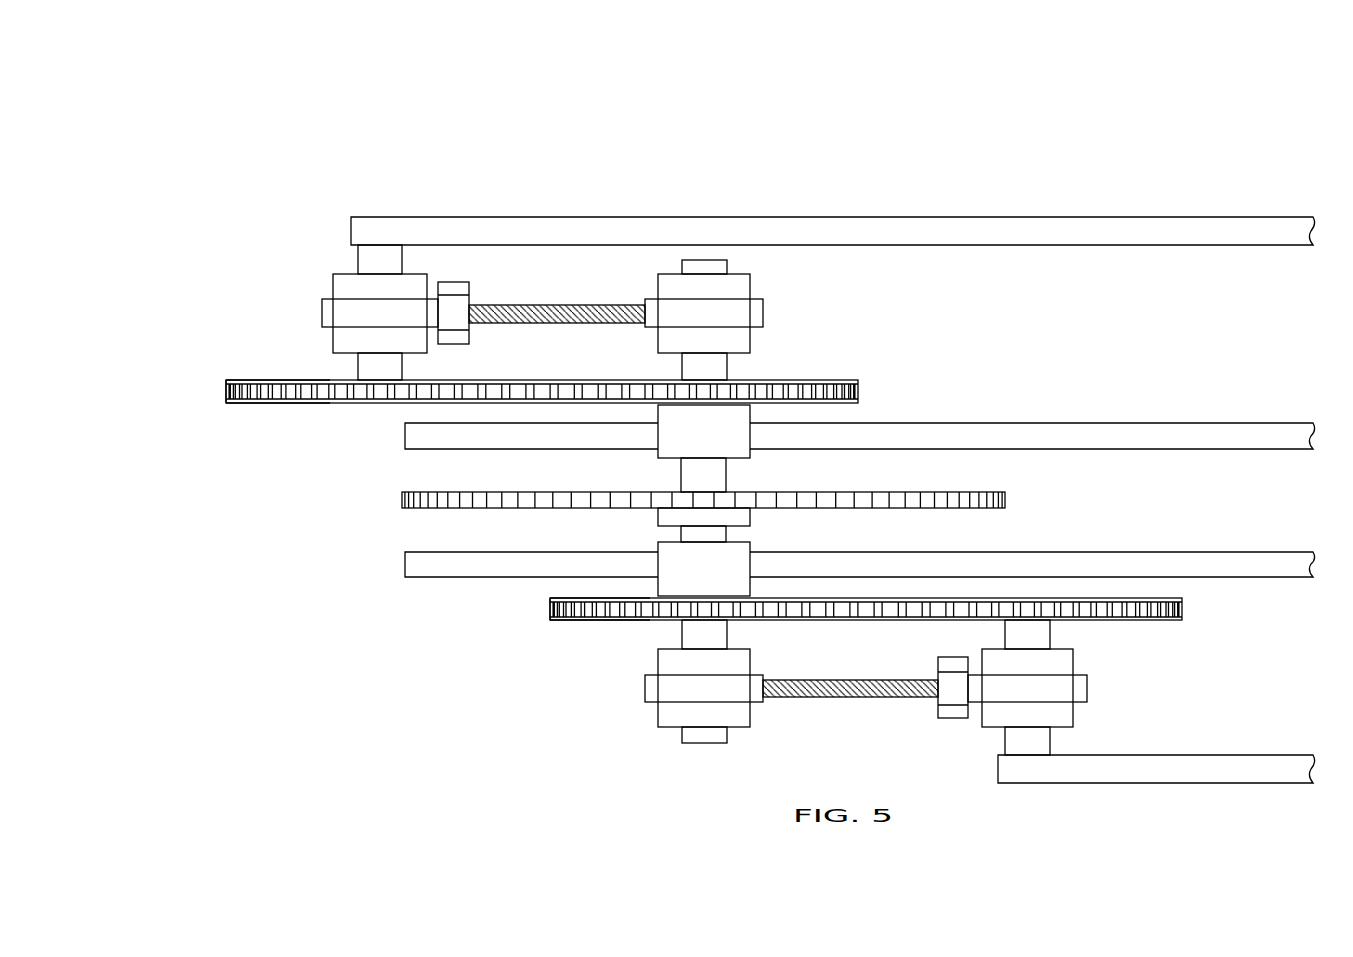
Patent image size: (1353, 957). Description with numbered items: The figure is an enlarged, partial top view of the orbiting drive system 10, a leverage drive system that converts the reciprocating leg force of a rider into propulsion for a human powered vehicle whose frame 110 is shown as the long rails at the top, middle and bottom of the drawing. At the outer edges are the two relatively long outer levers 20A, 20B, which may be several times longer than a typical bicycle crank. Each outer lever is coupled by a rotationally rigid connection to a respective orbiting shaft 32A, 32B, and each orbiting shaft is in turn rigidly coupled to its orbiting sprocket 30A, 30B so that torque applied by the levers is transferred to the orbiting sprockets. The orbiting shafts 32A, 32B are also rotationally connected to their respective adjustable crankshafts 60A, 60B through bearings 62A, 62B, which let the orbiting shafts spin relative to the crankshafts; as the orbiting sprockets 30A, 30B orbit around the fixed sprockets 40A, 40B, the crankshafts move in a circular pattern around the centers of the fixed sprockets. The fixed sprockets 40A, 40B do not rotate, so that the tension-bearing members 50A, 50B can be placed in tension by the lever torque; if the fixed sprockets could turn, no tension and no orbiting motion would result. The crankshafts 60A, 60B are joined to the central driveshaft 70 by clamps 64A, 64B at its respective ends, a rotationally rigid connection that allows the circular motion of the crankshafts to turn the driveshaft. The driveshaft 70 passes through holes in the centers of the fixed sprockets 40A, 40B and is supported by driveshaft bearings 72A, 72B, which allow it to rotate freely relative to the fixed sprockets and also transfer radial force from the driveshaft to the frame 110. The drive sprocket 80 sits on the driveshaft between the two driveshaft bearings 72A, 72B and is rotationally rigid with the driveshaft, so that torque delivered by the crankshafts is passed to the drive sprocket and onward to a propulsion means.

The orbiting drive system 10 is at (588, 146).
The outer lever 20A is at (1213, 772).
The outer lever 20B is at (850, 225).
The orbiting sprocket 30A is at (1123, 608).
The orbiting sprocket 30B is at (225, 385).
The orbiting shaft 32A is at (1028, 740).
The orbiting shaft 32B is at (381, 260).
The fixed sprocket 40A is at (593, 610).
The fixed sprocket 40B is at (760, 382).
The tension-bearing member 50A is at (763, 598).
The tension-bearing member 50B is at (479, 322).
The adjustable crankshaft 60A is at (853, 688).
The adjustable crankshaft 60B is at (556, 308).
The bearing 62A is at (1057, 693).
The bearing 62B is at (330, 318).
The clamp 64A is at (657, 692).
The clamp 64B is at (748, 312).
The driveshaft 70 is at (700, 748).
The driveshaft bearing 72A is at (718, 558).
The driveshaft bearing 72B is at (705, 442).
The drive sprocket 80 is at (1013, 492).
The frame 110 is at (1177, 440).